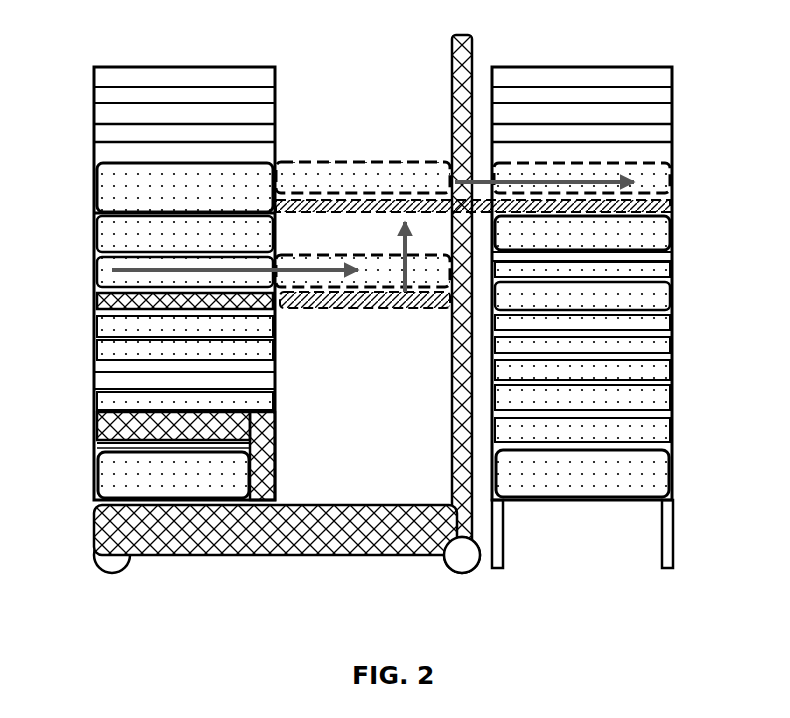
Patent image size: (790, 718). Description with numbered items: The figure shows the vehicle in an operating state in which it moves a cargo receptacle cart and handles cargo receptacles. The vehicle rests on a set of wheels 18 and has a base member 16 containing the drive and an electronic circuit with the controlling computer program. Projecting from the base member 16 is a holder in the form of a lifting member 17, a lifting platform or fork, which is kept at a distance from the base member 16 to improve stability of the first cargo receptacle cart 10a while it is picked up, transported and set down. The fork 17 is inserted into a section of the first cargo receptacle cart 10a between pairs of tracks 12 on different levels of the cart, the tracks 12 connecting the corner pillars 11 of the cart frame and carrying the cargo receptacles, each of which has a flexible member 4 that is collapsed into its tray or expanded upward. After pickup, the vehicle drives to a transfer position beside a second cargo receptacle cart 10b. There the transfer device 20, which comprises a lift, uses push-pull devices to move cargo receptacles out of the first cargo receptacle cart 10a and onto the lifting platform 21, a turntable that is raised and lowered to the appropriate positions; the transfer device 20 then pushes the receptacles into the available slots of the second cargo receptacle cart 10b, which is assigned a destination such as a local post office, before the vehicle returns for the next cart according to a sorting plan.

The first cargo receptacle cart 10a is at (379, 270).
The second cargo receptacle cart 10b is at (679, 68).
The corner pillar 11 is at (93, 101).
The pairs of tracks 12 is at (118, 142).
The flexible member 4 is at (110, 191).
The base member 16 is at (380, 516).
The lifting member 17 is at (277, 429).
The wheels 18 is at (93, 562).
The transfer device 20 is at (474, 41).
The lifting platform 21 is at (366, 213).